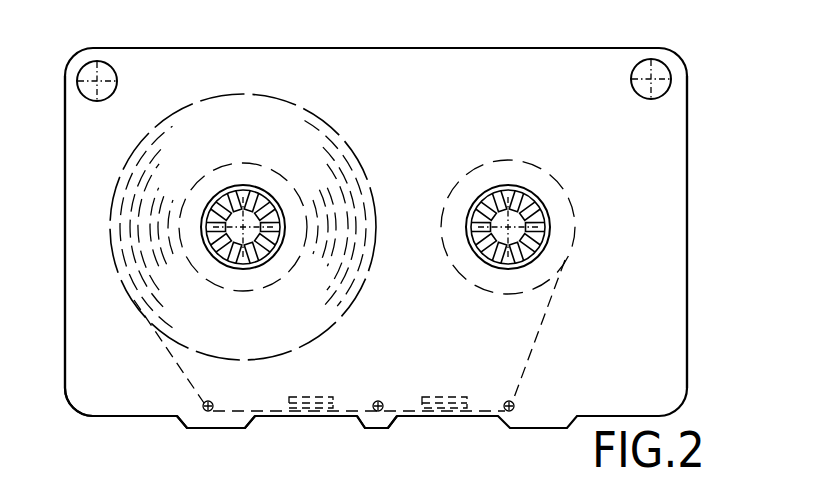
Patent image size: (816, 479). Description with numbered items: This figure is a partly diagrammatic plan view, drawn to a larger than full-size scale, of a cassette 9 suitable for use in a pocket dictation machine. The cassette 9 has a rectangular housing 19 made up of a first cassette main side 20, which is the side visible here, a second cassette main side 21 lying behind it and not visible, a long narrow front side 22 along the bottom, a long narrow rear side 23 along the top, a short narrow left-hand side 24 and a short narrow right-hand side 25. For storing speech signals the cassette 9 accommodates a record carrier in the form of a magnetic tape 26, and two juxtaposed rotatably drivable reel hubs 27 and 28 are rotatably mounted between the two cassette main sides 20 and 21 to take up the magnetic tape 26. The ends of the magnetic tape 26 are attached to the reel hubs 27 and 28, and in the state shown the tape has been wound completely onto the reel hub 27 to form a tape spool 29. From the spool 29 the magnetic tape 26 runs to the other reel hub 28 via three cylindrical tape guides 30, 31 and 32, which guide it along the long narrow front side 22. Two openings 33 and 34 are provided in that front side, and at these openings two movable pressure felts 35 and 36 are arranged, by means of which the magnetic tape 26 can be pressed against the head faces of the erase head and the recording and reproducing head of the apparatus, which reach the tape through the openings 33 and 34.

The cassette 9 is at (702, 88).
The rectangular housing 19 is at (74, 410).
The first cassette main side 20 is at (395, 66).
The second cassette main side 21 is at (520, 63).
The long narrow front side 22 is at (175, 420).
The long narrow rear side 23 is at (190, 48).
The short narrow left-hand side 24 is at (65, 288).
The short narrow right-hand side 25 is at (687, 214).
The magnetic tape 26 is at (558, 290).
The reel hub 27 is at (228, 191).
The reel hub 28 is at (497, 190).
The tape spool 29 is at (306, 132).
The cylindrical tape guide 30 is at (212, 402).
The cylindrical tape guide 31 is at (380, 401).
The cylindrical tape guide 32 is at (513, 402).
The opening 33 is at (265, 418).
The opening 34 is at (408, 418).
The pressure felt 35 is at (302, 397).
The pressure felt 36 is at (436, 397).